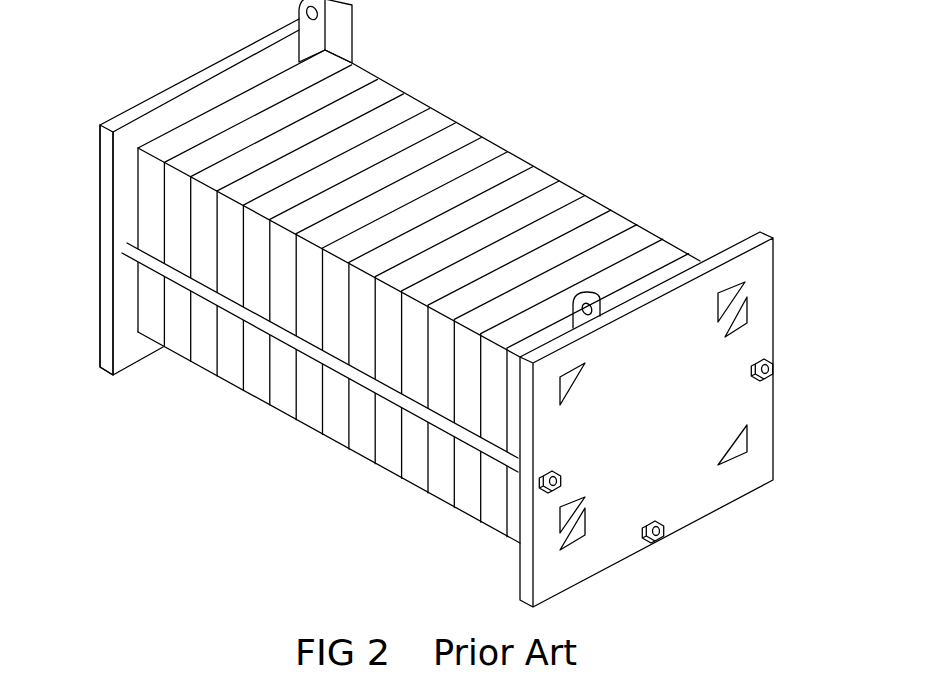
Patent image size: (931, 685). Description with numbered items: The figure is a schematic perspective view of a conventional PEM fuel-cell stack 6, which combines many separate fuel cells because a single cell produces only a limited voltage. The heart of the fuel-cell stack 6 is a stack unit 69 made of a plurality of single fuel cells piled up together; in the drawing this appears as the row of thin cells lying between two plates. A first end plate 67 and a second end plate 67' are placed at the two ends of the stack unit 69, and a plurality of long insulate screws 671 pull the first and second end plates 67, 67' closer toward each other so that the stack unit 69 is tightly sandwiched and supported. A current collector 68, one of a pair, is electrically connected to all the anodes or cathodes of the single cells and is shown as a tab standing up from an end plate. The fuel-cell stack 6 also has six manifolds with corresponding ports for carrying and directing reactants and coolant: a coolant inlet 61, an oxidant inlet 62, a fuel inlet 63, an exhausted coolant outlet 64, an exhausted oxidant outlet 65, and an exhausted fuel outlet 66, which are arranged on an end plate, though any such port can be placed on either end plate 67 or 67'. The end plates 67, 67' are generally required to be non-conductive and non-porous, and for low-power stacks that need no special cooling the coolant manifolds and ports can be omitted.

The fuel-cell stack 6 is at (424, 303).
The coolant inlet 61 is at (585, 363).
The oxidant inlet 62 is at (718, 314).
The fuel inlet 63 is at (747, 323).
The exhausted coolant outlet 64 is at (747, 426).
The exhausted oxidant outlet 65 is at (587, 520).
The exhausted fuel outlet 66 is at (582, 500).
The first end plate 67 is at (671, 392).
The second end plate 67' is at (189, 187).
The long insulate screws 671 is at (100, 248).
The current collector 68 is at (587, 293).
The stack unit 69 is at (250, 395).